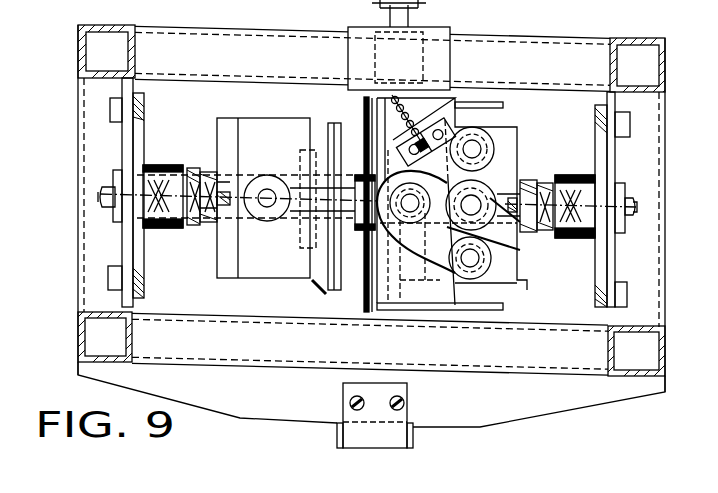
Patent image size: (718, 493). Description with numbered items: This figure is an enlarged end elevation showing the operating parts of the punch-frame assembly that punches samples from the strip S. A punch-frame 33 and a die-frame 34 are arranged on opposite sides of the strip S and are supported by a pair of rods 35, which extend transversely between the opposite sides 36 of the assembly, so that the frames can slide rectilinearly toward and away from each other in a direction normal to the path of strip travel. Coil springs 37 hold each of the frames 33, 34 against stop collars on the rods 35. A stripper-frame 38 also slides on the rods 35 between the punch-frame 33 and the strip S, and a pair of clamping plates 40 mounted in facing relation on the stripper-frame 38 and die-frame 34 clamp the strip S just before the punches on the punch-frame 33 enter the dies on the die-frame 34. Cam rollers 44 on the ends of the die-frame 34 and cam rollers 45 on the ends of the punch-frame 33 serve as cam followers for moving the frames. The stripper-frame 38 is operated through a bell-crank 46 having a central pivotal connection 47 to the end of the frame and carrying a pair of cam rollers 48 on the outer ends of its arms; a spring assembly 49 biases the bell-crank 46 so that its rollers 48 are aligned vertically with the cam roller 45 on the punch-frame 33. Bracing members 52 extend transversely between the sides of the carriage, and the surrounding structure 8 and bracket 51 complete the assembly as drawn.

The frame rail 8 is at (517, 37).
The punch-frame 33 is at (516, 289).
The die-frame 34 is at (263, 120).
The rods 35 is at (227, 218).
The sides 36 is at (78, 158).
The coil springs 37 is at (179, 176).
The stripper-frame 38 is at (505, 106).
The clamping plates 40 is at (331, 120).
The cam rollers 44 is at (270, 221).
The cam rollers 45 is at (492, 188).
The bell-crank 46 is at (404, 259).
The central pivotal connection 47 is at (377, 183).
The cam followers or rollers 48 is at (518, 142).
The spring assembly 49 is at (422, 107).
The mounting bracket 51 is at (413, 432).
The bracing members 52 is at (562, 413).
The strip S is at (362, 117).